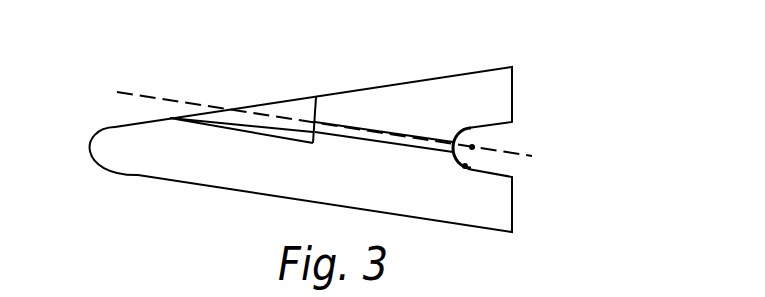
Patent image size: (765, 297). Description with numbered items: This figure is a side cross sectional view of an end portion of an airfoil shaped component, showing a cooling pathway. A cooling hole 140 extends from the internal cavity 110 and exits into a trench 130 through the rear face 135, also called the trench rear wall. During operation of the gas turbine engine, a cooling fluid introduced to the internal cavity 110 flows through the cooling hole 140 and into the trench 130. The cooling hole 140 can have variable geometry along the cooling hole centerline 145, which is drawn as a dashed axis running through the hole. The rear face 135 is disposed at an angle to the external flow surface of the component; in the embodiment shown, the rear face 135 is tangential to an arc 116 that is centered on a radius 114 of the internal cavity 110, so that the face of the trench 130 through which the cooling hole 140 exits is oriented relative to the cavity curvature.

The internal cavity 110 is at (503, 124).
The radius 114 is at (466, 166).
The arc 116 is at (453, 138).
The trench 130 is at (282, 101).
The rear face 135 is at (316, 97).
The cooling hole 140 is at (402, 133).
The cooling hole centerline 145 is at (160, 97).